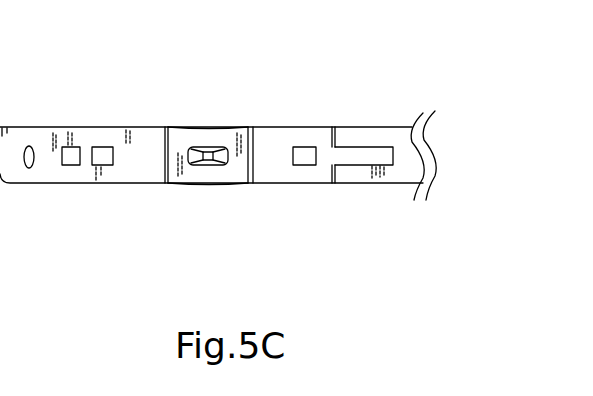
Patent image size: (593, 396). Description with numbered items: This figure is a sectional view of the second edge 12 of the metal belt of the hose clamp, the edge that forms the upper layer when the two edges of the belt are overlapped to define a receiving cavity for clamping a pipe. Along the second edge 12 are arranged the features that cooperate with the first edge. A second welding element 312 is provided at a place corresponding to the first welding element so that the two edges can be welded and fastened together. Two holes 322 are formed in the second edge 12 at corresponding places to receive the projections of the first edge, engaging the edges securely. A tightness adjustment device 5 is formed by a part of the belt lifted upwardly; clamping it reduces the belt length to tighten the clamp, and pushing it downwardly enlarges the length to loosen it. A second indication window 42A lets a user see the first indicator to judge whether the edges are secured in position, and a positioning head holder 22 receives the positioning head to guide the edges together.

The second edge 12 is at (203, 76).
The second welding element 312 is at (31, 157).
The hole 322 is at (77, 147).
The tightness adjustment device 5 is at (210, 127).
The second indication window 42A is at (304, 147).
The positioning head holder 22 is at (345, 163).